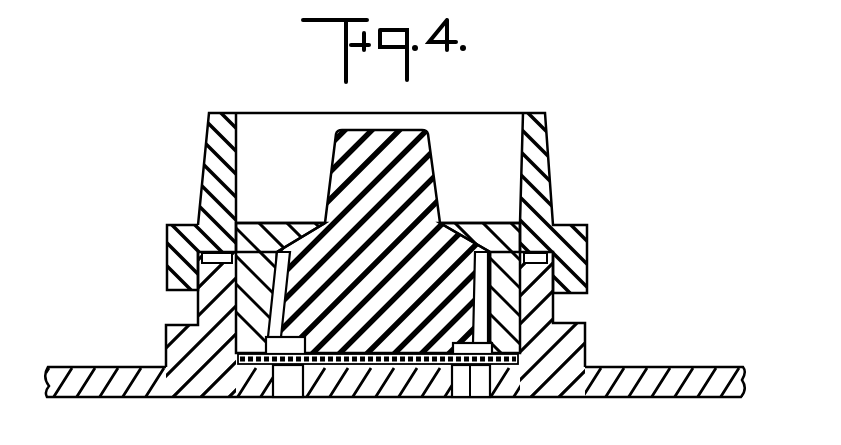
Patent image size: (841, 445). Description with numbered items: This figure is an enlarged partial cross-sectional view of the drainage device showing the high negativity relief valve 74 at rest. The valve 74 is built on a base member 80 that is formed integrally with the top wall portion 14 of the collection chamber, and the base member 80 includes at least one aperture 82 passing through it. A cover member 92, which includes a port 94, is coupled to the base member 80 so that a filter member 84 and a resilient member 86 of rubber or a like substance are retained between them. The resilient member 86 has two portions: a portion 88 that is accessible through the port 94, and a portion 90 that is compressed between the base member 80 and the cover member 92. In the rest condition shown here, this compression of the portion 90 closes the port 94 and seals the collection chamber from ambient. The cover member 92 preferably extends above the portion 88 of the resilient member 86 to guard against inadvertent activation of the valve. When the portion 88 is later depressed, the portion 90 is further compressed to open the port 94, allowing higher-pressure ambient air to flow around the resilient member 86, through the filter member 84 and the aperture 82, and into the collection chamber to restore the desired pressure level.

The top wall portion 14 is at (681, 368).
The high negativity relief valve 74 is at (578, 181).
The base member 80 is at (577, 323).
The aperture 82 is at (288, 388).
The filter member 84 is at (466, 400).
The resilient member 86 is at (440, 131).
The portion of resilient member 88 is at (436, 198).
The portion of resilient member 90 is at (343, 345).
The cover member 92 is at (205, 188).
The port 94 is at (318, 230).